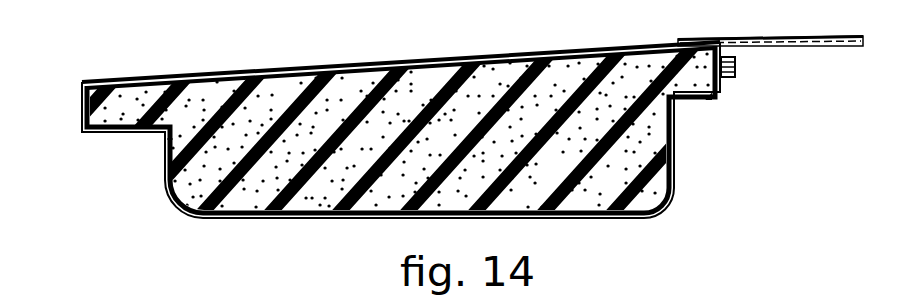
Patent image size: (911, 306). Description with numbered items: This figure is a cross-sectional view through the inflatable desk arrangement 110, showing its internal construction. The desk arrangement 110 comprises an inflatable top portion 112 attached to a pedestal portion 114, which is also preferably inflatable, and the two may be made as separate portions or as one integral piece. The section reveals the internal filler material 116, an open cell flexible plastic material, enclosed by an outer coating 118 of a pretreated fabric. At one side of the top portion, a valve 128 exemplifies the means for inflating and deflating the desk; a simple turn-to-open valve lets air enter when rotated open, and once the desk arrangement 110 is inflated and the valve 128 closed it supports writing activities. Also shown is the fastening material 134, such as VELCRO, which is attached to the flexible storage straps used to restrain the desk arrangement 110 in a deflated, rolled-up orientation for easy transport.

The desk arrangement 110 is at (125, 81).
The inflatable top portion 112 is at (82, 118).
The pedestal portion 114 is at (170, 180).
The internal filler material 116 is at (424, 73).
The outer coating 118 is at (220, 74).
The valve 128 is at (732, 77).
The fastening material 134 is at (848, 48).